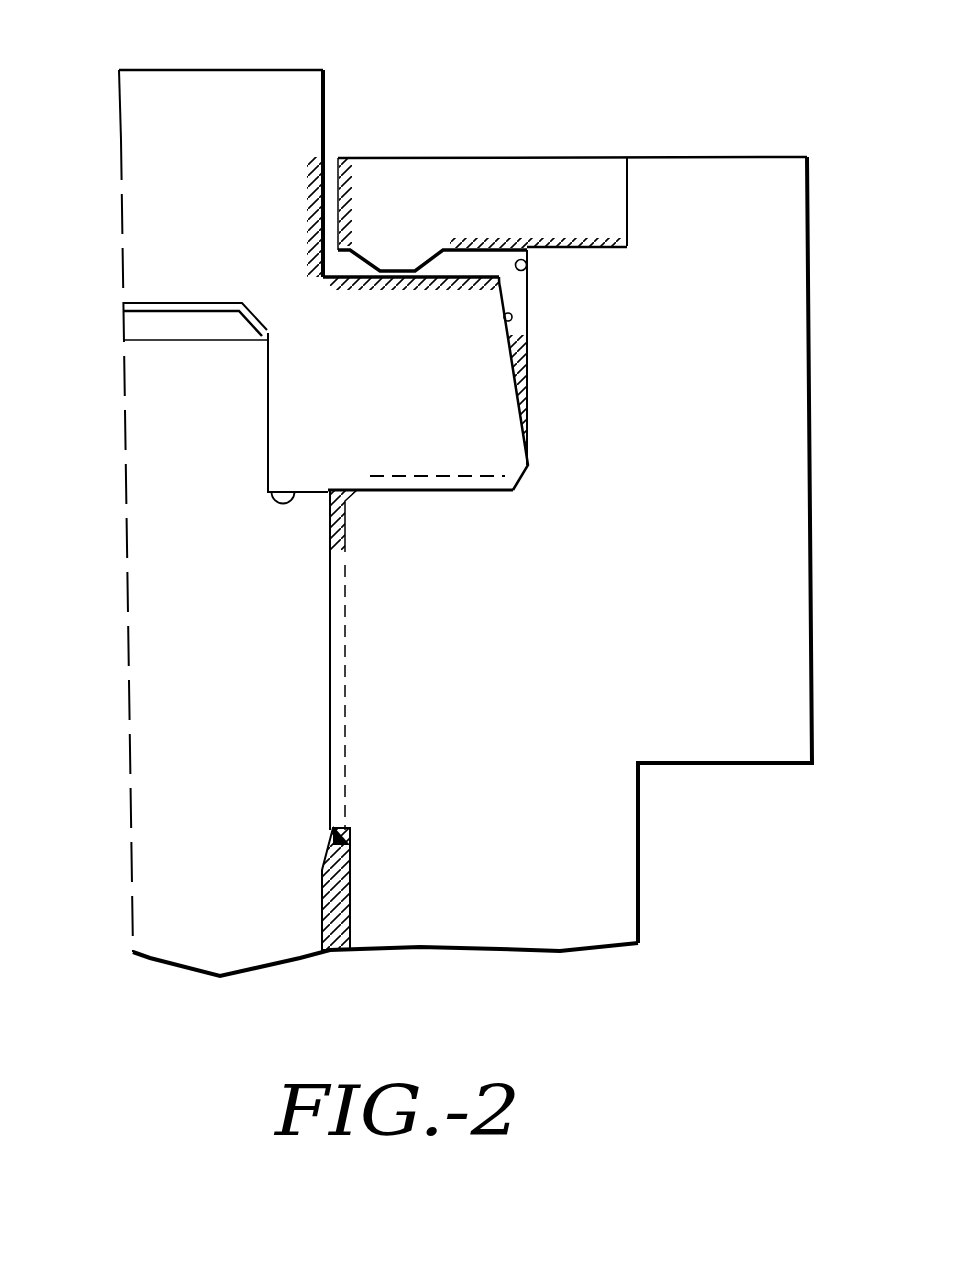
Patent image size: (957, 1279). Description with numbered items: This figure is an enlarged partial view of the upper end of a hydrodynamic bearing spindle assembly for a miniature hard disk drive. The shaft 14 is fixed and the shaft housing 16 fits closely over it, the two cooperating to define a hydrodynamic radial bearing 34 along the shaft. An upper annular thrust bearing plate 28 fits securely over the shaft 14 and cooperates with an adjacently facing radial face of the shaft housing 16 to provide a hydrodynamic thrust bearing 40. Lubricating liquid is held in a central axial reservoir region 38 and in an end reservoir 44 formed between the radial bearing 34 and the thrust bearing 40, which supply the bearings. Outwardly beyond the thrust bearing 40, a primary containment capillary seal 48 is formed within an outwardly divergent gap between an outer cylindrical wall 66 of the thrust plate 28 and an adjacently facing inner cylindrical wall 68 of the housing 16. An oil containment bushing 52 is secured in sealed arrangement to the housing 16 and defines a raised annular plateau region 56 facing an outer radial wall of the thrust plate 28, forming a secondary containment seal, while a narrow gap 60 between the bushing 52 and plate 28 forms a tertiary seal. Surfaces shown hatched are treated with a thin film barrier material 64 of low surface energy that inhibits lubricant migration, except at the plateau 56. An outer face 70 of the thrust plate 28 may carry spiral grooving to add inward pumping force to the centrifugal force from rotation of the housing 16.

The shaft 14 is at (177, 503).
The shaft housing 16 is at (778, 246).
The upper annular thrust bearing plate 28 is at (213, 90).
The hydrodynamic radial bearing 34 is at (351, 688).
The central axial reservoir region 38 is at (343, 905).
The hydrodynamic thrust bearing 40 is at (418, 498).
The end reservoir 44 is at (330, 505).
The primary containment capillary seal 48 is at (526, 331).
The oil containment bushing 52 is at (455, 163).
The raised annular plateau region 56 is at (408, 258).
The narrow gap 60 is at (331, 150).
The thin film barrier material 64 is at (358, 190).
The outer cylindrical wall 66 is at (505, 321).
The inner cylindrical wall 68 is at (530, 276).
The outer face 70 is at (440, 283).